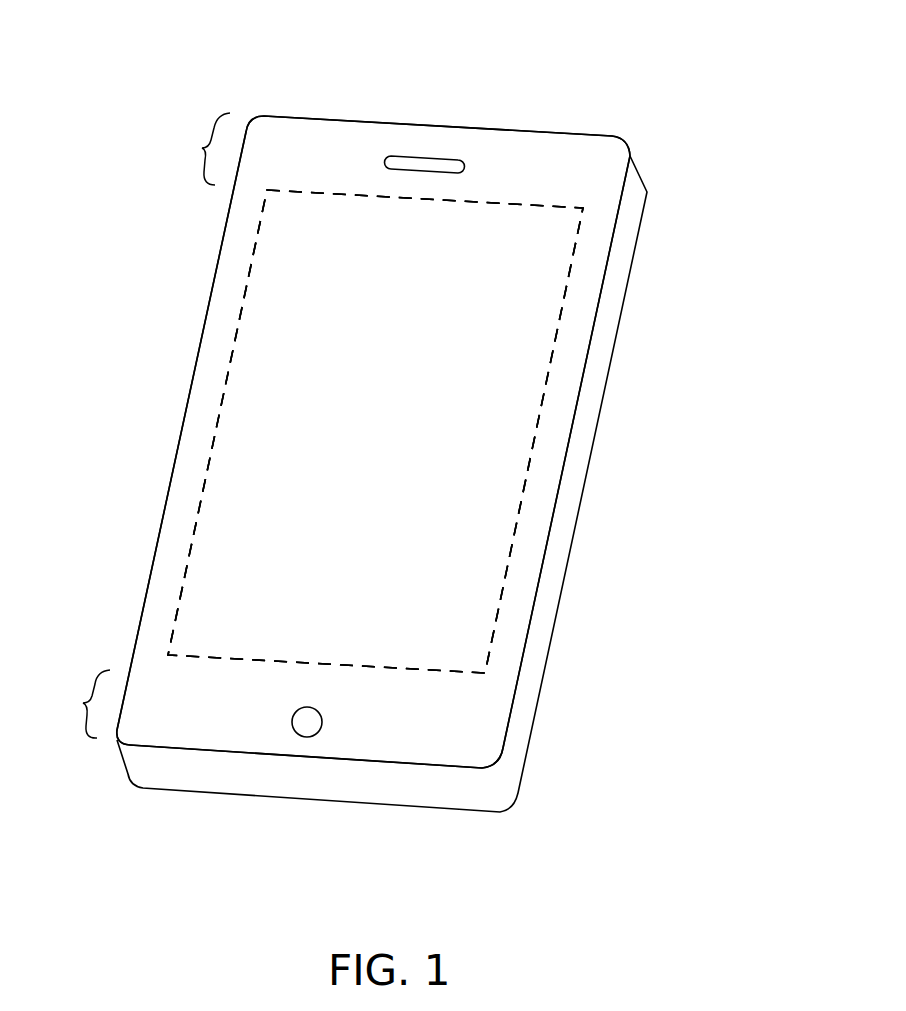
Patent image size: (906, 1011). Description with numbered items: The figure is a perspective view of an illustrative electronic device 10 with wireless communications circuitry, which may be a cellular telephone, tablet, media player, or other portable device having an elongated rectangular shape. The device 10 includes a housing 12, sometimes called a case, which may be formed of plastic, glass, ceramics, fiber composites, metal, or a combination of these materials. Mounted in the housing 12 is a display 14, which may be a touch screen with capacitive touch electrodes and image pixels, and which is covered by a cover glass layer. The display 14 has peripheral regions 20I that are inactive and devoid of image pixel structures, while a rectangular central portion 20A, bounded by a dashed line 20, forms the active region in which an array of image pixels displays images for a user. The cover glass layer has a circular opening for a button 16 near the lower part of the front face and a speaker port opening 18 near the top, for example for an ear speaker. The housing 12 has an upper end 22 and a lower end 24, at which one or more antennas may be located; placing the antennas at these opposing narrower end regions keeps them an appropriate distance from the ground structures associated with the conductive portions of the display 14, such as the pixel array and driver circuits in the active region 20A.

The electronic device 10 is at (705, 61).
The housing 12 is at (621, 272).
The display 14 is at (520, 423).
The button 16 is at (307, 737).
The speaker port opening 18 is at (418, 158).
The dashed line 20 is at (210, 455).
The active display region 20A is at (223, 543).
The peripheral region 20I is at (512, 160).
The upper end 22 is at (200, 149).
The lower end 24 is at (80, 704).